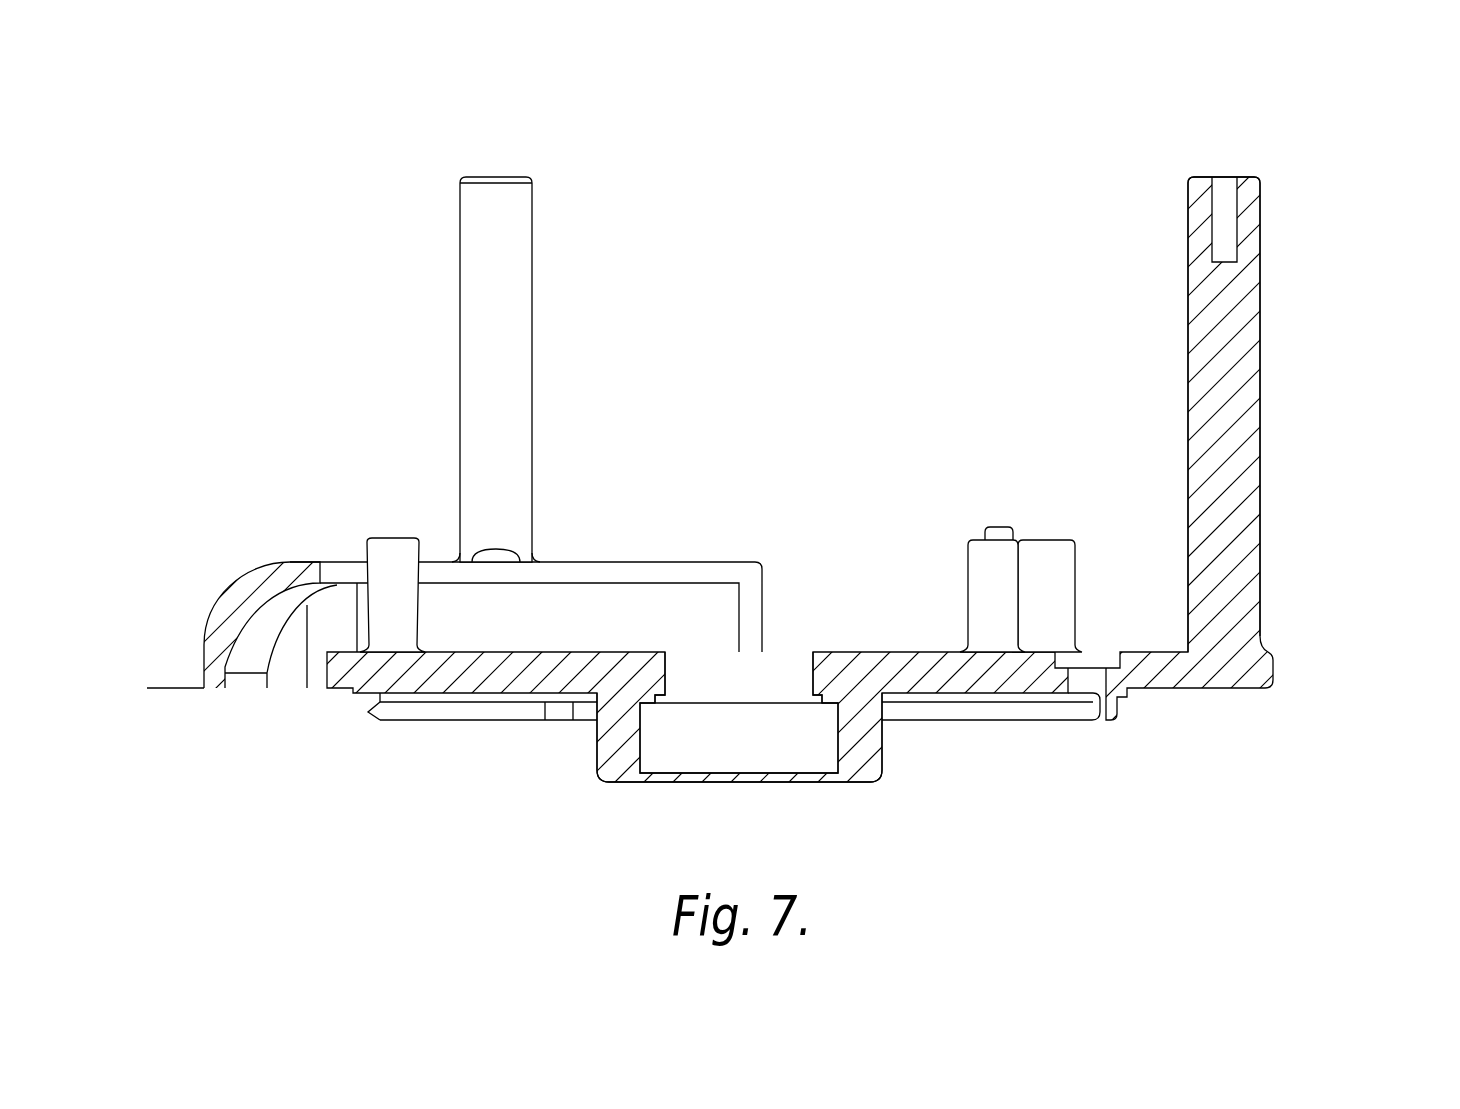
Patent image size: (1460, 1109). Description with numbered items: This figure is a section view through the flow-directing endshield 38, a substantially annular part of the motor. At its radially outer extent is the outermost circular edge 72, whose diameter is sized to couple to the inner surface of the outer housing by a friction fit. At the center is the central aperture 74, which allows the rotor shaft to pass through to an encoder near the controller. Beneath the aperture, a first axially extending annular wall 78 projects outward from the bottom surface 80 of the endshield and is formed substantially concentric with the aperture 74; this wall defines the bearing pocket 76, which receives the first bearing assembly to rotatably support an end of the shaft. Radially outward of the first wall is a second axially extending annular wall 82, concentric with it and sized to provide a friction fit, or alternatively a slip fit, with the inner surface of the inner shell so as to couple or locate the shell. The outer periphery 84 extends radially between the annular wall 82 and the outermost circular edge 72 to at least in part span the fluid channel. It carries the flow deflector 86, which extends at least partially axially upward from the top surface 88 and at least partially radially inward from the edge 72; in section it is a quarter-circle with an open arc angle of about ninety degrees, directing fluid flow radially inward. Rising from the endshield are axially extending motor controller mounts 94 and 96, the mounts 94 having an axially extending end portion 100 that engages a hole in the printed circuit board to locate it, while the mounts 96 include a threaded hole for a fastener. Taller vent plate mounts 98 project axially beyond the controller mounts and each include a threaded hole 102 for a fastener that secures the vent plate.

The flow-directing endshield 38 is at (1330, 101).
The outermost circular edge 72 is at (1278, 668).
The central aperture 74 is at (775, 678).
The bearing pocket 76 is at (697, 738).
The first axially extending annular wall 78 is at (883, 760).
The bottom surface 80 is at (955, 693).
The second axially extending annular wall 82 is at (365, 710).
The outer periphery 84 is at (362, 743).
The flow deflector 86 is at (157, 688).
The top surface 88 is at (597, 652).
The motor controller mount 94 is at (388, 540).
The motor controller mount 96 is at (972, 543).
The vent plate mount 98 is at (463, 203).
The axially extending end portion 100 is at (1000, 527).
The threaded hole 102 is at (1220, 197).